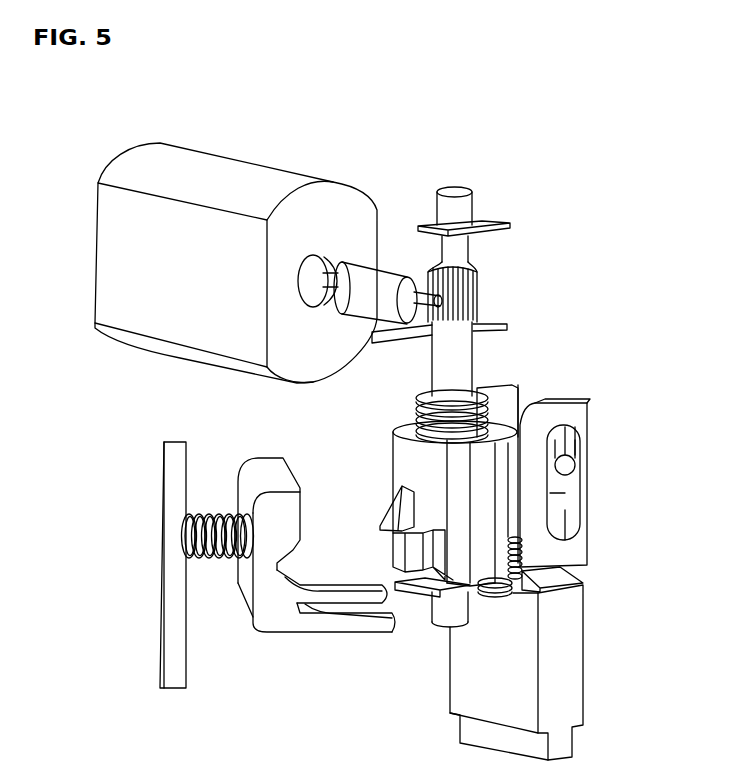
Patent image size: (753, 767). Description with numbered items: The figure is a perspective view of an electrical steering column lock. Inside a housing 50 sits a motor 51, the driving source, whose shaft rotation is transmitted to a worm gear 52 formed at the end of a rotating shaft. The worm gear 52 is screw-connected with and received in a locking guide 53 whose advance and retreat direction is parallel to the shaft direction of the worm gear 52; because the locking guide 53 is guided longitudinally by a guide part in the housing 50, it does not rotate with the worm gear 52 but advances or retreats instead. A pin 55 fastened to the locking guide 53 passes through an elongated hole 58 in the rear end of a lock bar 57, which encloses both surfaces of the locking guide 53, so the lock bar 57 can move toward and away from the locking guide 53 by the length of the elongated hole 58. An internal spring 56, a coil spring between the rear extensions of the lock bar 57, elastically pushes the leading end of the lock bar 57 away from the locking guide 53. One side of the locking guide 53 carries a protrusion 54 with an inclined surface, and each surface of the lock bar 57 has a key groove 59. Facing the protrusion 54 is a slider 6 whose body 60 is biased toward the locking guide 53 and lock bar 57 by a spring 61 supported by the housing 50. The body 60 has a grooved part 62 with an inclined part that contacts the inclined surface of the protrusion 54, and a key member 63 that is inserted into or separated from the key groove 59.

The slider 6 is at (241, 553).
The housing 50 is at (175, 478).
The motor 51 is at (240, 170).
The worm gear 52 is at (453, 400).
The locking guide 53 is at (413, 453).
The protrusion 54 is at (392, 513).
The pin 55 is at (567, 463).
The internal spring 56 is at (543, 557).
The lock bar 57 is at (573, 670).
The elongated hole 58 is at (568, 527).
The key groove 59 is at (575, 577).
The body 60 is at (311, 550).
The spring 61 is at (198, 560).
The grooved part 62 is at (290, 562).
The key member 63 is at (355, 627).